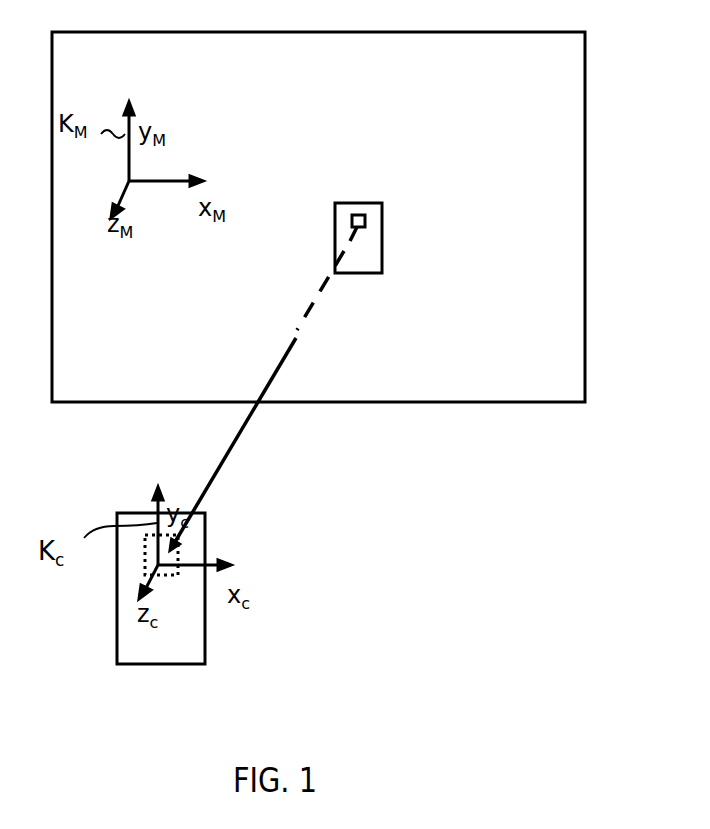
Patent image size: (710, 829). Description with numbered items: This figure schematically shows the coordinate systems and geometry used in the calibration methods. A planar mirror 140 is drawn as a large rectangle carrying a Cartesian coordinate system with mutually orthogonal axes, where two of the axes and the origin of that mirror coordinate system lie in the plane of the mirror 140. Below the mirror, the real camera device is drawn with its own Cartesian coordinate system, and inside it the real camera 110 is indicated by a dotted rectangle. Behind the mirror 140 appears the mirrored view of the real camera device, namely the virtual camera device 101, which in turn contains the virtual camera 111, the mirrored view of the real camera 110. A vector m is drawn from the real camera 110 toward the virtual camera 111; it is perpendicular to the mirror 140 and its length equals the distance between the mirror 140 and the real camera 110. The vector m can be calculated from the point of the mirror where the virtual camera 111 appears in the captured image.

The planar mirror 140 is at (587, 383).
The virtual camera device 101 is at (384, 263).
The virtual camera 111 is at (358, 215).
The real camera 110 is at (178, 553).
The vector m is at (233, 447).